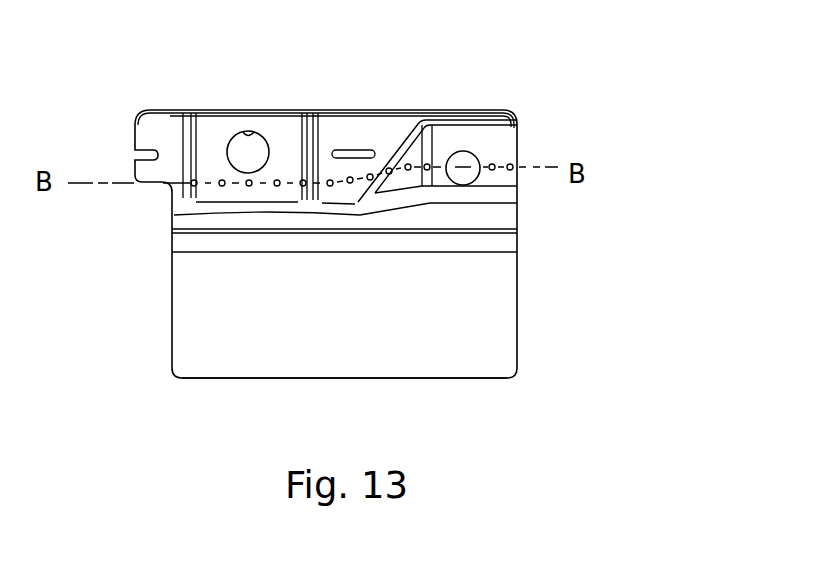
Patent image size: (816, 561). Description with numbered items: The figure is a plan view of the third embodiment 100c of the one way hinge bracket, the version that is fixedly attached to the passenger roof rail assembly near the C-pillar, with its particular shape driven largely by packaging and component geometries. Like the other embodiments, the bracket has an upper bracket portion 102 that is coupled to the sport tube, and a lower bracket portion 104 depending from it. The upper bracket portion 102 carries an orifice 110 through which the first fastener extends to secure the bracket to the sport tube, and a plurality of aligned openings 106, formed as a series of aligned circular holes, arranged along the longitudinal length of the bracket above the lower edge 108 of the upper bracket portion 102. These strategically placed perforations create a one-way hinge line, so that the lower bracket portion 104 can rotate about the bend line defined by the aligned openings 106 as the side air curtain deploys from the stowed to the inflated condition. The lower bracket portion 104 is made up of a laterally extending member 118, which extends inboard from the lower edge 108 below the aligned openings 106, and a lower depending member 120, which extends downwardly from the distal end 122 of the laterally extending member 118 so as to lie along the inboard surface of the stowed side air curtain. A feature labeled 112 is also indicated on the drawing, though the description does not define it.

The third embodiment of the one way hinge bracket 100c is at (611, 118).
The upper bracket portion 102 is at (352, 128).
The lower bracket portion 104 is at (488, 313).
The plurality of aligned openings 106 is at (191, 185).
The lower edge of the upper bracket portion 108 is at (511, 193).
The orifice 110 is at (253, 133).
The raised flange 112 is at (514, 127).
The laterally extending member 118 is at (443, 211).
The lower depending member 120 is at (493, 360).
The distal end of the laterally extending member 122 is at (170, 190).